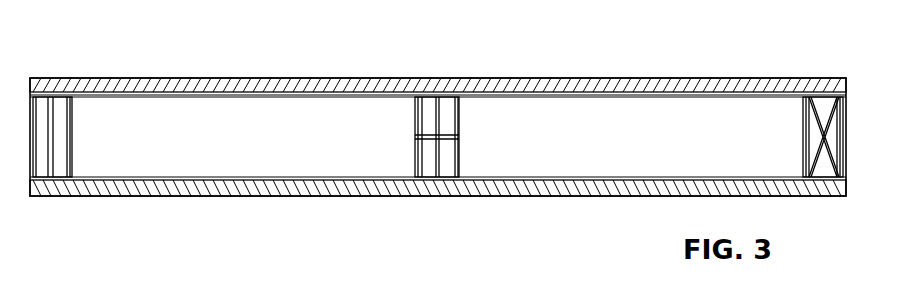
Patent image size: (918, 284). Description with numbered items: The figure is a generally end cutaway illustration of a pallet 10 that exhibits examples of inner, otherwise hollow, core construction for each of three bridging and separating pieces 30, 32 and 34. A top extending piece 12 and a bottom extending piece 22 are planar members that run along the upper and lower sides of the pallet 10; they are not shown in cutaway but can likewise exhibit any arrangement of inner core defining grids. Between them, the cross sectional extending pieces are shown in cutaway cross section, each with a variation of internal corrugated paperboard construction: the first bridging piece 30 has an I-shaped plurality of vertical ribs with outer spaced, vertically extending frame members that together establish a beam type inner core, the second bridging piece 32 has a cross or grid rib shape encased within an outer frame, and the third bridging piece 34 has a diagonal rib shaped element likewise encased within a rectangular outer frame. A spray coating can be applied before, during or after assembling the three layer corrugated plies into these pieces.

The pallet 10 is at (530, 69).
The top extending piece 12 is at (267, 82).
The bottom extending piece 22 is at (315, 185).
The first bridging piece 30 is at (62, 180).
The second bridging piece 32 is at (417, 107).
The third bridging piece 34 is at (803, 110).